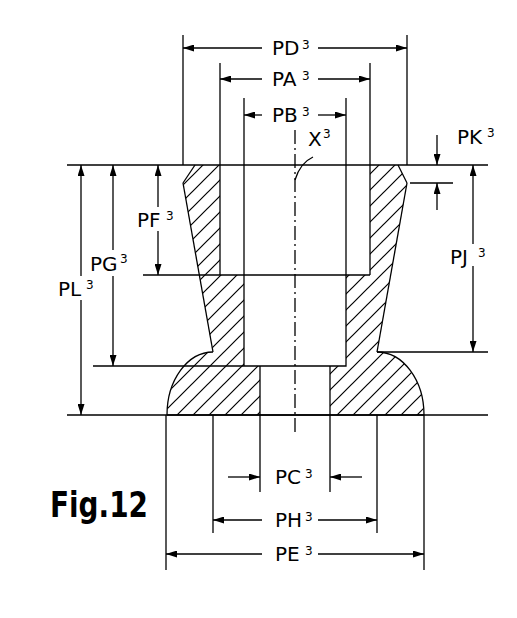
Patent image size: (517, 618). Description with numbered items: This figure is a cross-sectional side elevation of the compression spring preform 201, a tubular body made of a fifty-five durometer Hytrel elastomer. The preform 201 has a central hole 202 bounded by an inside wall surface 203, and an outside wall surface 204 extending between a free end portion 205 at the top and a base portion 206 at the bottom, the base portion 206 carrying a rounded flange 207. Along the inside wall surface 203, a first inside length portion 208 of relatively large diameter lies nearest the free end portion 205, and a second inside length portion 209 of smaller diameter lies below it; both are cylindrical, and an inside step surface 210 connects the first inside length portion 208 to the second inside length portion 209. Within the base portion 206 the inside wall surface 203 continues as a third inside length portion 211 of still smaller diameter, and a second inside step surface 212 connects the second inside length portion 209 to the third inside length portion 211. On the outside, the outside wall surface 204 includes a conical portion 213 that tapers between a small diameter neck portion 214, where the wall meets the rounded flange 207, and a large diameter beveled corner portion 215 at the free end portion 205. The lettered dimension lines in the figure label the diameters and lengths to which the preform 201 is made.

The compression spring preform 201 is at (415, 128).
The central hole 202 is at (291, 214).
The inside wall surface 203 is at (370, 222).
The outside wall surface 204 is at (386, 306).
The free end portion 205 is at (385, 190).
The base portion 206 is at (398, 390).
The rounded flange 207 is at (412, 372).
The first inside length portion 208 is at (220, 232).
The second inside length portion 209 is at (245, 323).
The inside step surface 210 is at (316, 273).
The third inside length portion 211 is at (328, 396).
The second inside step surface 212 is at (308, 364).
The conical portion 213 is at (194, 245).
The small diameter neck portion 214 is at (211, 350).
The large diameter beveled corner portion 215 is at (193, 165).